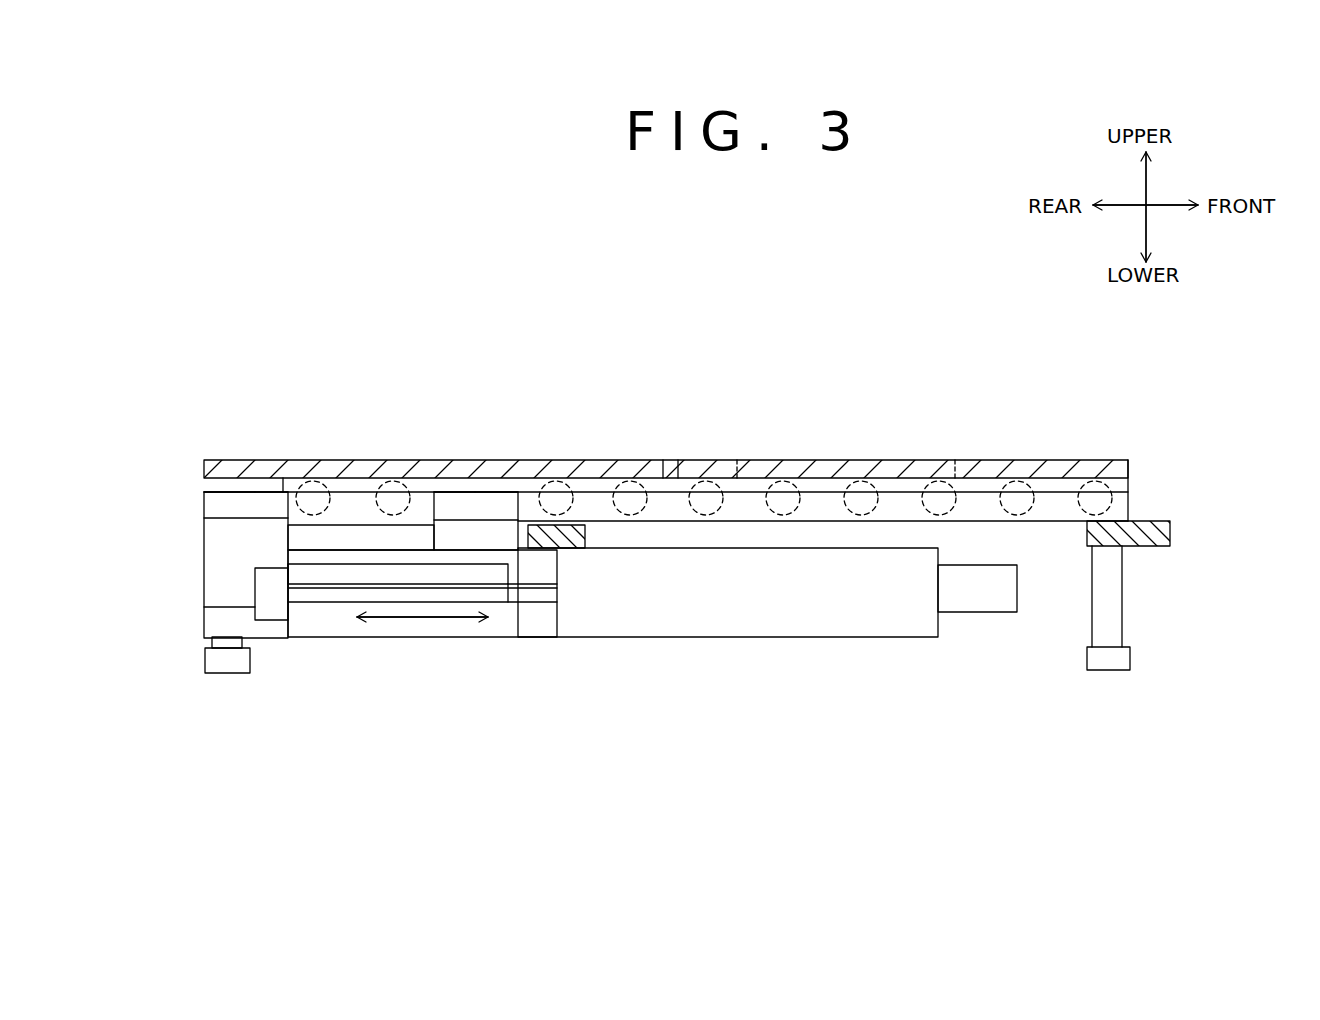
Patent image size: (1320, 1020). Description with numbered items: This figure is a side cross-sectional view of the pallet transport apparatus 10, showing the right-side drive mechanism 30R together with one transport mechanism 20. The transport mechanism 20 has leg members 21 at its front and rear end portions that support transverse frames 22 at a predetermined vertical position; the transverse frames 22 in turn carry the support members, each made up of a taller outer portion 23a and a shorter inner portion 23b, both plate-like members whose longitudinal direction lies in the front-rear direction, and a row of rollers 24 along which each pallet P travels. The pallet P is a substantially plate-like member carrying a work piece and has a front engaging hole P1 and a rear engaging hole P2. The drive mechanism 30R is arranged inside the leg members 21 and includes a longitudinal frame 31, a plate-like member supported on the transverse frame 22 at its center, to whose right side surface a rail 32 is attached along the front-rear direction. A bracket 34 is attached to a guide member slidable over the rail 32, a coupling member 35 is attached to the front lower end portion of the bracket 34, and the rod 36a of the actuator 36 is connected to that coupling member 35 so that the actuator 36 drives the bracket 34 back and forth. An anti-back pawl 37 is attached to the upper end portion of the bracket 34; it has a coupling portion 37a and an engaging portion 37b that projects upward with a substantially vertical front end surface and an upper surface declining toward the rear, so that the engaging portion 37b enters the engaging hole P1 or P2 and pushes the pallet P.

The article transport facility 10 is at (220, 225).
The transport mechanism 20 is at (830, 335).
The leg member 21 is at (219, 672).
The transverse frame 22 is at (565, 555).
The outer portion 23a is at (1127, 485).
The inner portion 23b is at (1058, 513).
The roller 24 is at (318, 478).
The right-side drive mechanism 30R is at (716, 683).
The longitudinal frame 31 is at (400, 632).
The rail 32 is at (328, 573).
The bracket 34 is at (230, 592).
The coupling member 35 is at (276, 610).
The actuator 36 is at (833, 640).
The rod 36a is at (508, 590).
The anti-back pawl 37 is at (323, 325).
The coupling portion 37a is at (283, 490).
The engaging portion 37b is at (255, 490).
The pallet P is at (593, 455).
The front engaging hole P1 is at (462, 478).
The rear engaging hole P2 is at (230, 470).